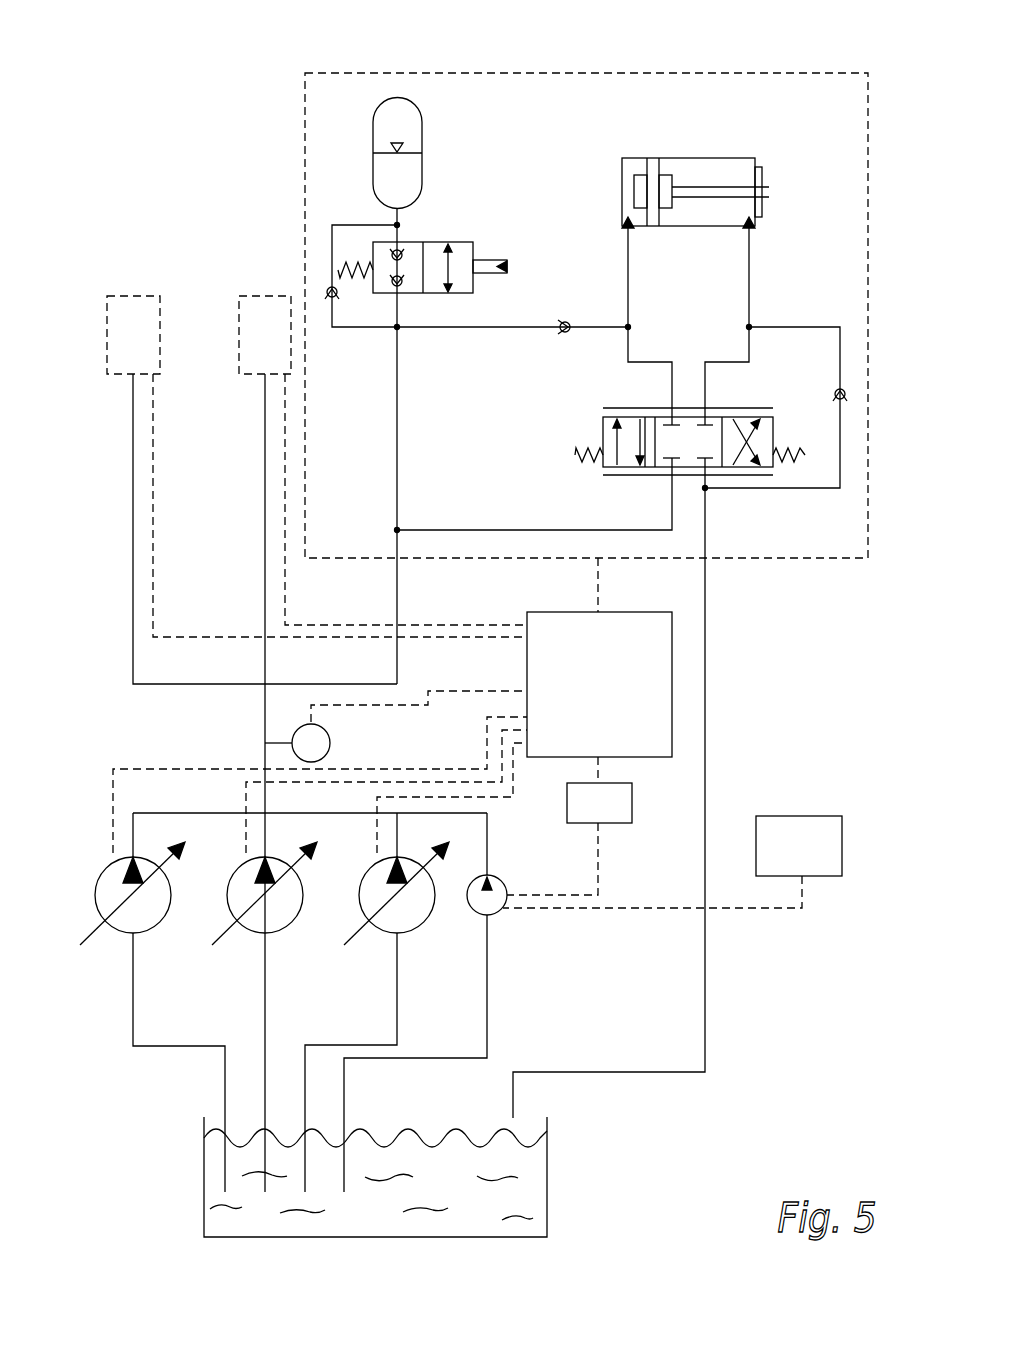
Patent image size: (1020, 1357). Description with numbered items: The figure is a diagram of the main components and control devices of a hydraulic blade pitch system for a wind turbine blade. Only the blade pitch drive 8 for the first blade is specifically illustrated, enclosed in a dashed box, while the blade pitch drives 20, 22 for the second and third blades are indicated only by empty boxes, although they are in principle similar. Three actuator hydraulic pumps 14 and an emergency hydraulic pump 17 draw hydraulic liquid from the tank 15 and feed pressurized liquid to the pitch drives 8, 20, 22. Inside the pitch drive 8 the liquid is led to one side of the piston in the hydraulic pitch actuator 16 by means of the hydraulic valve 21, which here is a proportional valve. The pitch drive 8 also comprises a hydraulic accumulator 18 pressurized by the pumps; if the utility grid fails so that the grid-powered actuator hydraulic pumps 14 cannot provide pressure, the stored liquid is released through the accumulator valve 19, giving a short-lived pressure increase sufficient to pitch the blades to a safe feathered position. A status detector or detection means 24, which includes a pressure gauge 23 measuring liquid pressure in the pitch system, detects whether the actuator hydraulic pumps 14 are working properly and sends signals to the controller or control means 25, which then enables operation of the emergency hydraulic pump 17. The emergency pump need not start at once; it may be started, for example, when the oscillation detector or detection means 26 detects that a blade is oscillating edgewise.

The blade pitch drive 8 is at (513, 123).
The actuator hydraulic pump 14 is at (117, 892).
The tank 15 is at (532, 1212).
The hydraulic pitch actuator 16 is at (714, 178).
The emergency hydraulic pump 17 is at (498, 897).
The hydraulic accumulator 18 is at (388, 125).
The accumulator valve 19 is at (430, 262).
The blade pitch drive for second blade 20 is at (255, 313).
The hydraulic valve 21 is at (632, 428).
The blade pitch drive for third blade 22 is at (113, 313).
The pressure gauge 23 is at (330, 743).
The status detector or detection means 24 is at (638, 653).
The controller or control means 25 is at (620, 801).
The oscillation detector or detection means 26 is at (797, 825).